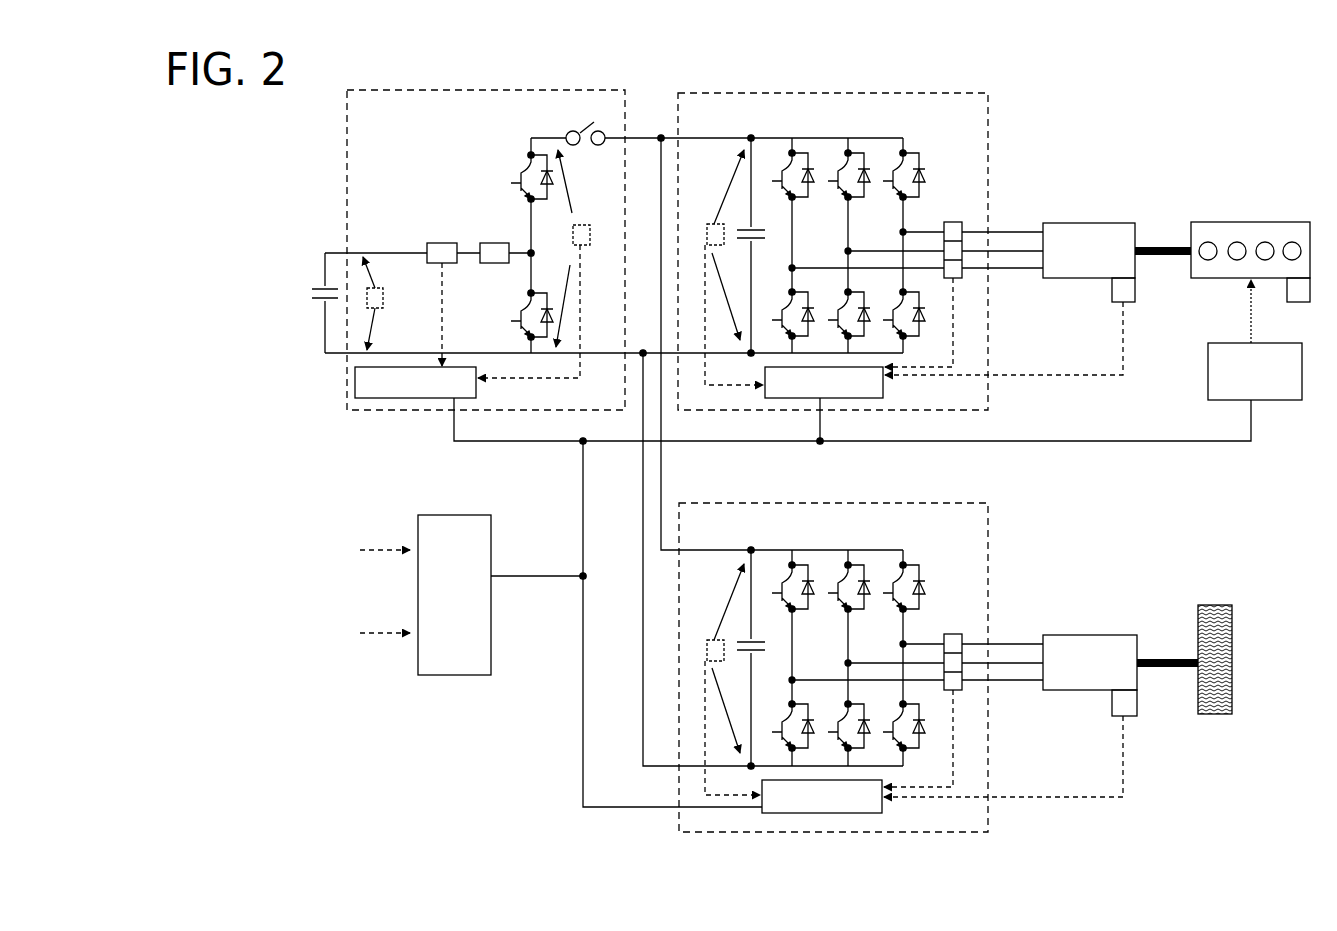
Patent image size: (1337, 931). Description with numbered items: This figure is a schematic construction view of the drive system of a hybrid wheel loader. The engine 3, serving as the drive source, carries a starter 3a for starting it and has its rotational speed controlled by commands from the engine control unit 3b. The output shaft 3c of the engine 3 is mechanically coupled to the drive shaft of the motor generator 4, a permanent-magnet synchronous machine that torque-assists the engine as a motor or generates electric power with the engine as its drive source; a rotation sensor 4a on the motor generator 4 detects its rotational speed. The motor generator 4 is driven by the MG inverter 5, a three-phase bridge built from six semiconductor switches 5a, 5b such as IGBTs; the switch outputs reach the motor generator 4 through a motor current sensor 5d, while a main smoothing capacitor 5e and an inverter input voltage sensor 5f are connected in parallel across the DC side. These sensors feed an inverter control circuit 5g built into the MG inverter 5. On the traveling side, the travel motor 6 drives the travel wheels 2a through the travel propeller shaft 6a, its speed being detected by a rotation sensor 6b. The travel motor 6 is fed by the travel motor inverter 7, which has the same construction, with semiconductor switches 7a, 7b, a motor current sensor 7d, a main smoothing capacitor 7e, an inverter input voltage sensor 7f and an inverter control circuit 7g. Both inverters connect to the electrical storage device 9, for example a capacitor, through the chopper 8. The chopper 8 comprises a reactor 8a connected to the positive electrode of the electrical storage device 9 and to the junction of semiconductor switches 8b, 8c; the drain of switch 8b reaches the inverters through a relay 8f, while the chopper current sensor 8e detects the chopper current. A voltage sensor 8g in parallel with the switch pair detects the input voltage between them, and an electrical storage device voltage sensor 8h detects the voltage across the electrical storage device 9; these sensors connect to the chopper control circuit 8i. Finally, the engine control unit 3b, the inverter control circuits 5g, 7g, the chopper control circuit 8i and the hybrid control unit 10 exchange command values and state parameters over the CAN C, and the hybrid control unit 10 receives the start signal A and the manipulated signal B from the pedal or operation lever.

The travel wheels 2a is at (1220, 605).
The engine 3 is at (1278, 222).
The starter 3a is at (1310, 304).
The engine control unit (ECU) 3b is at (1286, 400).
The output shaft 3c is at (1168, 236).
The motor generator (MG) 4 is at (1097, 222).
The rotation sensor 4a is at (1135, 304).
The MG inverter 5 is at (870, 88).
The semiconductor switches 5a is at (787, 165).
The semiconductor switches 5b is at (788, 300).
The motor current sensor 5d is at (959, 221).
The main smoothing capacitor 5e is at (763, 234).
The inverter input voltage sensor 5f is at (703, 223).
The inverter control circuit 5g is at (885, 392).
The travel motor 6 is at (1099, 634).
The travel propeller shaft 6a is at (1172, 656).
The rotation sensor 6b is at (1137, 718).
The travel motor inverter 7 is at (841, 498).
The semiconductor switches 7a is at (787, 577).
The semiconductor switches 7b is at (788, 712).
The motor current sensor 7d is at (959, 634).
The main smoothing capacitor 7e is at (763, 648).
The inverter input voltage sensor 7f is at (706, 638).
The inverter control circuit 7g is at (886, 809).
The chopper 8 is at (438, 88).
The reactor 8a is at (496, 240).
The semiconductor switch 8b is at (528, 156).
The semiconductor switch 8c is at (526, 296).
The chopper current sensor 8e is at (445, 240).
The relay 8f is at (593, 122).
The voltage sensor 8g is at (590, 226).
The electrical storage device voltage sensor 8h is at (383, 297).
The chopper control circuit 8i is at (478, 394).
The electrical storage device 9 is at (319, 241).
The HCU (hybrid control unit) 10 is at (455, 506).
The start signal A is at (377, 539).
The manipulated signal B is at (377, 623).
The CAN (Controller Area Network) C is at (1046, 438).